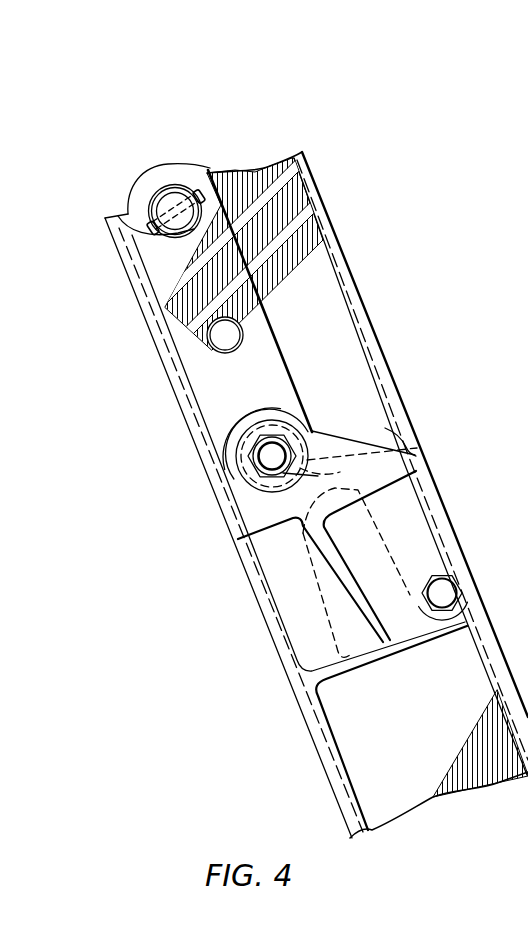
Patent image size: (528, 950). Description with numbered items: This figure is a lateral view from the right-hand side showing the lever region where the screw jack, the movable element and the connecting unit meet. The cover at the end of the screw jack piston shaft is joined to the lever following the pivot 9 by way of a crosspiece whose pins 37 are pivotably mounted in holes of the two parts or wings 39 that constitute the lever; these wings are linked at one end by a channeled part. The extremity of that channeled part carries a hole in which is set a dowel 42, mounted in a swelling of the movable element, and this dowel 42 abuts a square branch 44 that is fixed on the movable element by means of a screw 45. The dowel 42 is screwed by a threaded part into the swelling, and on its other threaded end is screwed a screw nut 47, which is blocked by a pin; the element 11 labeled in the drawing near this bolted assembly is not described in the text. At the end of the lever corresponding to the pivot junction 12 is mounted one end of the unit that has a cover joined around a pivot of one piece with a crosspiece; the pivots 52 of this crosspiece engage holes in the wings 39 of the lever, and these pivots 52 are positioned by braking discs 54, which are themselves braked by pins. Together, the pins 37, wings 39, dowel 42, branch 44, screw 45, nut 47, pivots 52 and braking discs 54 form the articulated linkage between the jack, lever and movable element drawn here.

The pivot junction 12 is at (208, 171).
The pivot 52 is at (175, 200).
The braking disc 54 is at (153, 194).
The wing 39 is at (266, 327).
The pin 37 is at (208, 342).
The pivot 9 is at (231, 337).
The dowel 42 is at (312, 428).
The bolt 11 is at (268, 456).
The screw nut 47 is at (336, 463).
The square branch 44 is at (255, 516).
The screw 45 is at (446, 591).